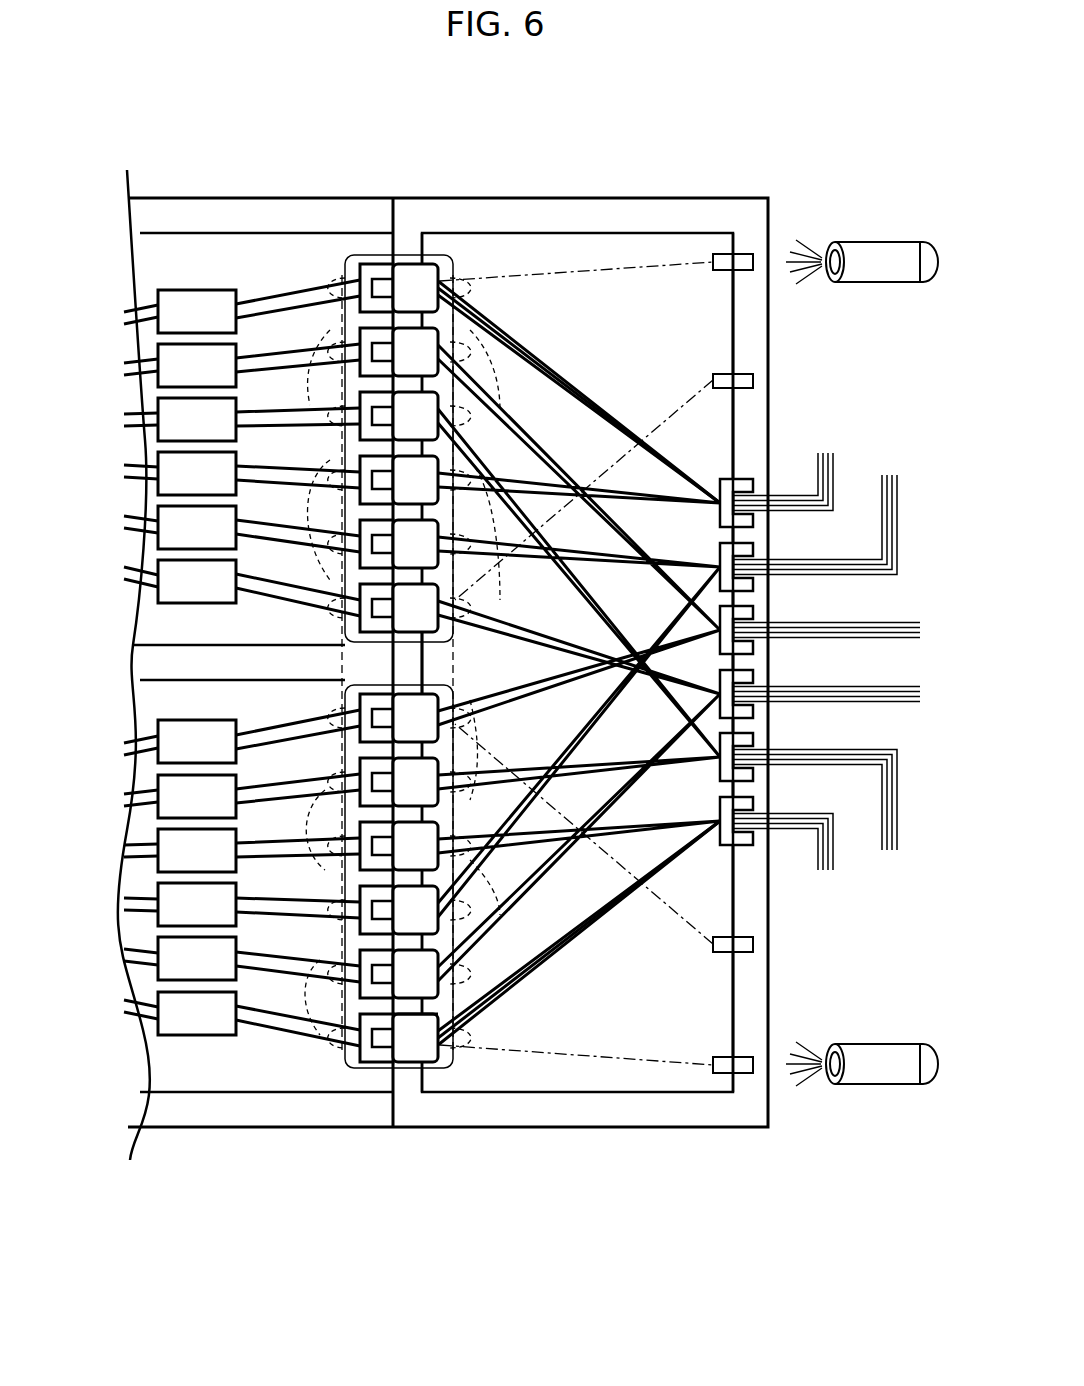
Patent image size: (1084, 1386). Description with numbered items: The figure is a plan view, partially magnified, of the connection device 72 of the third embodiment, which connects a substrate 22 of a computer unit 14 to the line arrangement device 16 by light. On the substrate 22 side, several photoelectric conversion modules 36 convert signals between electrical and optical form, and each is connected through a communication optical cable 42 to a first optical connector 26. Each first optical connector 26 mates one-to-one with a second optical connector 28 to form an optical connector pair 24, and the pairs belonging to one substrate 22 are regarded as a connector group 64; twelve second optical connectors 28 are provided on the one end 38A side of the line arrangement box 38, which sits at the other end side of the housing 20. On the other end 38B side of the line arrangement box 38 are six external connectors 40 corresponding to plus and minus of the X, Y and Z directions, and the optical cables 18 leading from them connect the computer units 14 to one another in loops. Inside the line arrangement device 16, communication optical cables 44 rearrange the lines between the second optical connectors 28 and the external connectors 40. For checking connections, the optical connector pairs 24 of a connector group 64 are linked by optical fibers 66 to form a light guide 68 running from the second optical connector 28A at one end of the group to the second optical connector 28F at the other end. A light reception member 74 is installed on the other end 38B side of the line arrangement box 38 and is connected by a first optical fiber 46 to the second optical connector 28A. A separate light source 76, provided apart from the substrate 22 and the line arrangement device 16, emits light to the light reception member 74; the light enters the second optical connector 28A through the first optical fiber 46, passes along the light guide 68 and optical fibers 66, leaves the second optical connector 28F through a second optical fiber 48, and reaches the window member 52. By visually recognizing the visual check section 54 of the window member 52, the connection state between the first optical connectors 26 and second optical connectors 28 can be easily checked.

The computer unit 14 is at (160, 1137).
The line arrangement device 16 is at (573, 1131).
The optical cable 18 is at (878, 500).
The housing 20 is at (225, 1131).
The substrate 22 is at (172, 231).
The optical connector pair 24 is at (340, 122).
The first optical connector 26 is at (375, 262).
The second optical connector 28 is at (412, 262).
The second optical connector at the one end side of the connector group 28A is at (412, 1065).
The second optical connector at the other end of the connector group 28F is at (414, 683).
The photoelectric conversion module 36 is at (176, 290).
The line arrangement box 38 is at (609, 1096).
The one end of the line arrangement box 38A is at (455, 1075).
The other end of the line arrangement box 38B is at (735, 1006).
The external connector 40 is at (748, 478).
The communication optical cable 42 is at (298, 292).
The communication optical cable 44 is at (672, 484).
The first optical fiber 46 is at (656, 262).
The second optical fiber 48 is at (670, 420).
The window member 52 is at (745, 374).
The visual check section 54 is at (755, 380).
The connector group 64 is at (458, 250).
The optical fiber 66 is at (320, 345).
The light guide 68 is at (466, 326).
The connection device 72 is at (500, 142).
The light reception member 74 is at (745, 253).
The light source 76 is at (877, 283).